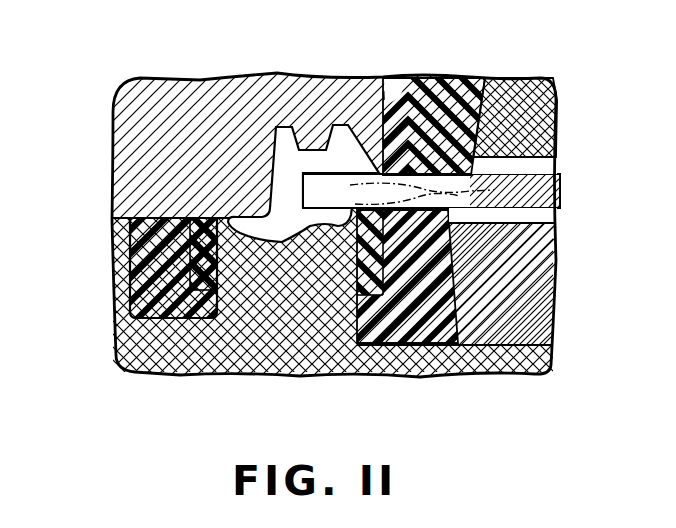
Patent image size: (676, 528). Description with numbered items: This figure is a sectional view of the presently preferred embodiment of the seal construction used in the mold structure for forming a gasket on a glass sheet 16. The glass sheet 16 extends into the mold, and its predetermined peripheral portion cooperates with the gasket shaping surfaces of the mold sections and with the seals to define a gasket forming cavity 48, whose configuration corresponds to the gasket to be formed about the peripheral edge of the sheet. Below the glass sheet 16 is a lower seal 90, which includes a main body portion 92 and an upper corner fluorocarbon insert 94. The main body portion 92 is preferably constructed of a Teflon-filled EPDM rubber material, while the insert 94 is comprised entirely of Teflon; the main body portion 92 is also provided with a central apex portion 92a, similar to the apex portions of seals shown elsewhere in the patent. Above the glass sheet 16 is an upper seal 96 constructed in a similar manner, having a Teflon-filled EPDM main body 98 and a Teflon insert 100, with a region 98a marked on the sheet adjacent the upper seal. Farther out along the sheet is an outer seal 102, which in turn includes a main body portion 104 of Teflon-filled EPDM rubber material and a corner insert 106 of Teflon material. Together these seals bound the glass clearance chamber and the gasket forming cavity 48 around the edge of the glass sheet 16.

The glass sheet 16 is at (555, 197).
The gasket forming cavity 48 is at (281, 137).
The lower seal 90 is at (462, 297).
The main body portion 92 is at (405, 300).
The central apex portion 92a is at (402, 191).
The upper corner fluorocarbon insert 94 is at (365, 243).
The upper seal 96 is at (480, 126).
The main body 98 is at (466, 92).
The weld zone of upper insert 98a is at (444, 193).
The Teflon insert 100 is at (392, 100).
The outer seal 102 is at (130, 261).
The main body portion 104 is at (133, 293).
The corner insert 106 is at (202, 226).